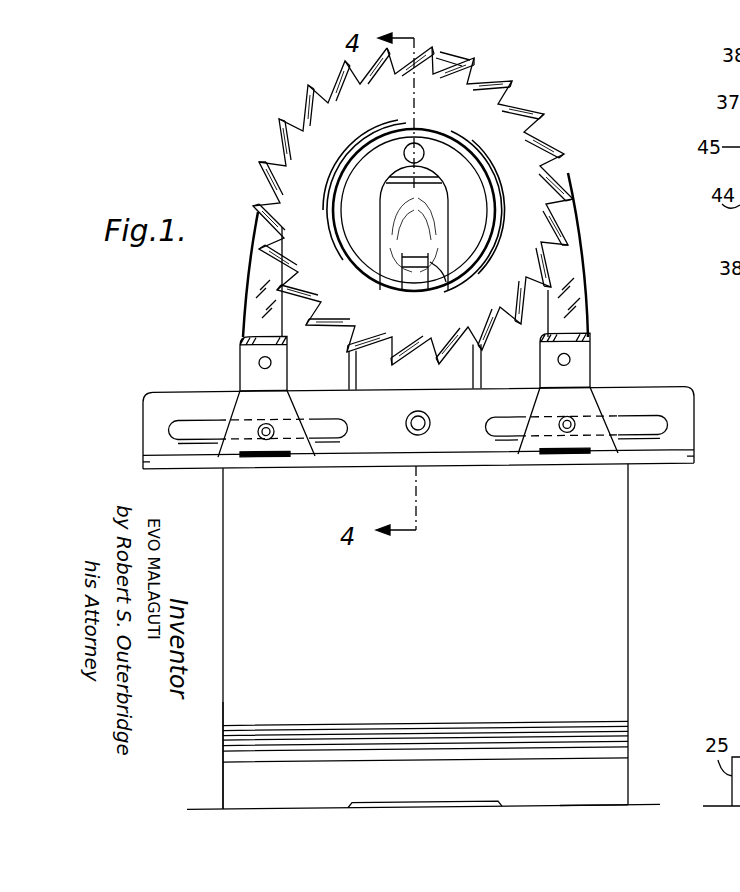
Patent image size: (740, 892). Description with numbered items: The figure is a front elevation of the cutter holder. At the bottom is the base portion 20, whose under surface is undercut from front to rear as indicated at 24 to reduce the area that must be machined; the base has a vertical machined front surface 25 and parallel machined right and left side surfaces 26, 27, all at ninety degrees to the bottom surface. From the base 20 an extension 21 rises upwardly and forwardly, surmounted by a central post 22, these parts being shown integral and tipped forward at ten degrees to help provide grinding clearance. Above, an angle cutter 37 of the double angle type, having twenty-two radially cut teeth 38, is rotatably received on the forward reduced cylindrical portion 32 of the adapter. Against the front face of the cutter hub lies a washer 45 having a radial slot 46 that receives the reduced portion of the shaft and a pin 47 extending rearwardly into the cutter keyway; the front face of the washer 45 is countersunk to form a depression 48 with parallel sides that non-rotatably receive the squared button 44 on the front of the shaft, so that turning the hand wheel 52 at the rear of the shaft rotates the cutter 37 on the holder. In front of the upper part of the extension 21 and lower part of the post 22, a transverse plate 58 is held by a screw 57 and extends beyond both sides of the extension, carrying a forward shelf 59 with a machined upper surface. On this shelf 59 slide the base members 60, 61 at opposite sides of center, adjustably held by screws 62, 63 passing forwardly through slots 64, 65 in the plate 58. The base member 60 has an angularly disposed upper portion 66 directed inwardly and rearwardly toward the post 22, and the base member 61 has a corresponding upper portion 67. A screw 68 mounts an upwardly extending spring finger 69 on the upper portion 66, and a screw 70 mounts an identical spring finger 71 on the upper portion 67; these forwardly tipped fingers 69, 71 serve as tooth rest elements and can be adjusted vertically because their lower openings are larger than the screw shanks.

The base portion 20 is at (638, 770).
The extension 21 is at (620, 578).
The central post 22 is at (452, 380).
The undercut 24 is at (428, 803).
The front surface 25 is at (612, 786).
The right side surface 26 is at (632, 765).
The left side surface 27 is at (223, 770).
The forward reduced cylindrical portion 32 is at (381, 251).
The angle cutter 37 is at (440, 195).
The teeth 38 is at (570, 197).
The button 44 is at (407, 215).
The washer 45 is at (462, 195).
The radial slot 46 is at (422, 277).
The pin 47 is at (415, 188).
The depression 48 is at (443, 267).
The hand wheel 52 is at (433, 60).
The screw 57 is at (421, 430).
The transverse plate 58 is at (463, 430).
The forward shelf 59 is at (152, 455).
The base member 60 is at (580, 406).
The base member 61 is at (240, 411).
The screw 62 is at (567, 436).
The screw 63 is at (265, 439).
The slot 64 is at (657, 436).
The slot 65 is at (173, 428).
The upper portion 66 is at (568, 360).
The upper portion 67 is at (258, 360).
The screw 68 is at (592, 336).
The spring finger 69 is at (577, 290).
The screw 70 is at (248, 333).
The spring finger 71 is at (258, 283).